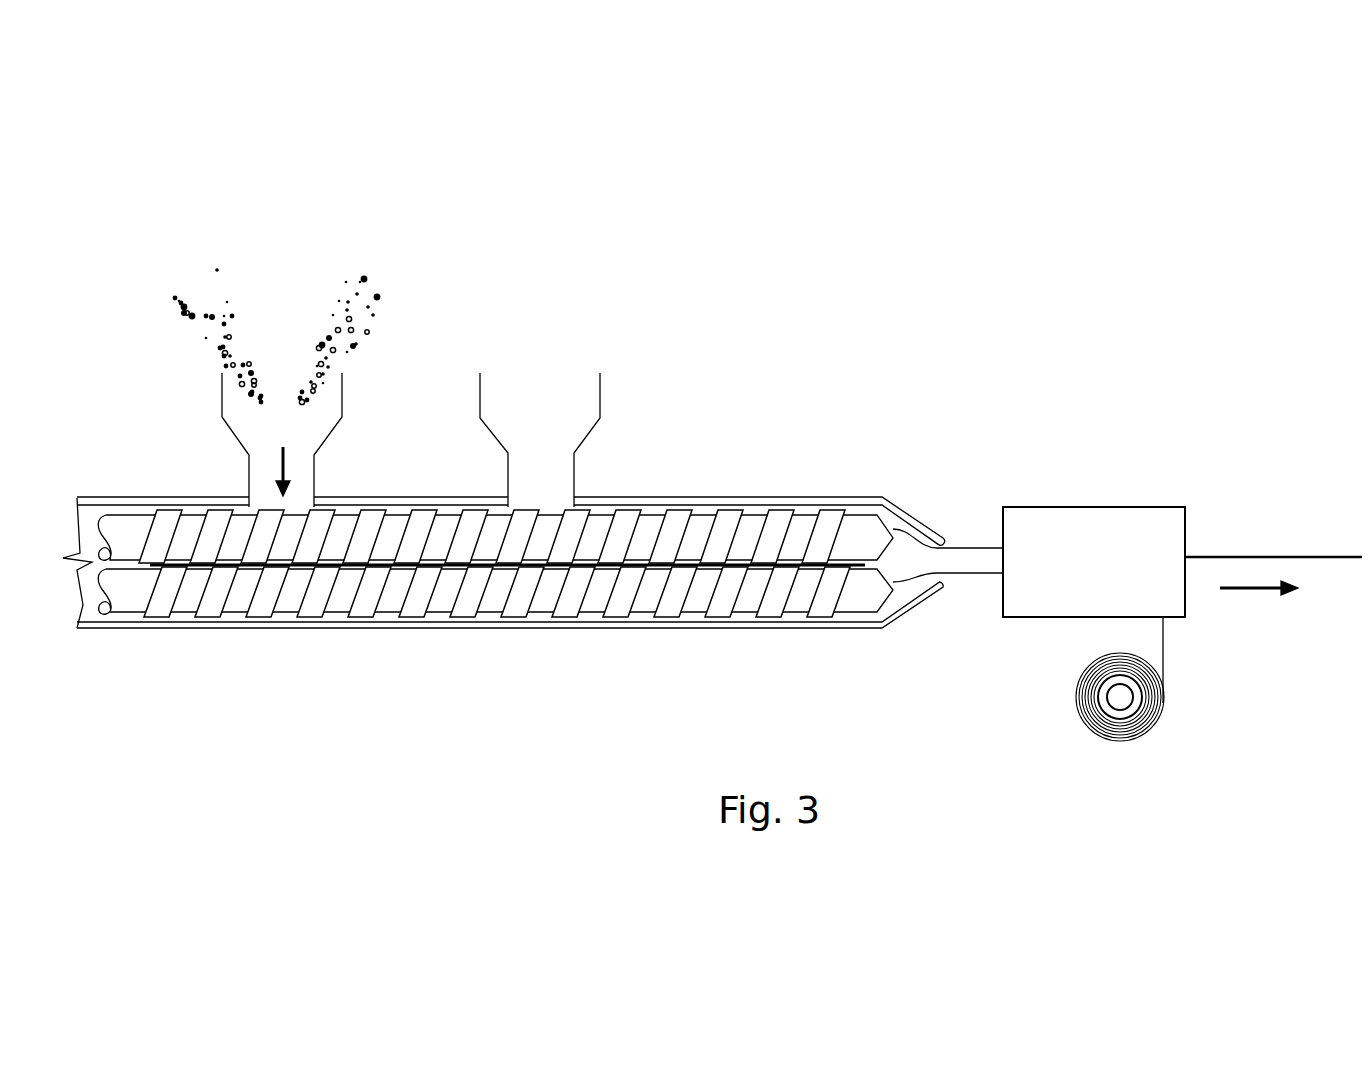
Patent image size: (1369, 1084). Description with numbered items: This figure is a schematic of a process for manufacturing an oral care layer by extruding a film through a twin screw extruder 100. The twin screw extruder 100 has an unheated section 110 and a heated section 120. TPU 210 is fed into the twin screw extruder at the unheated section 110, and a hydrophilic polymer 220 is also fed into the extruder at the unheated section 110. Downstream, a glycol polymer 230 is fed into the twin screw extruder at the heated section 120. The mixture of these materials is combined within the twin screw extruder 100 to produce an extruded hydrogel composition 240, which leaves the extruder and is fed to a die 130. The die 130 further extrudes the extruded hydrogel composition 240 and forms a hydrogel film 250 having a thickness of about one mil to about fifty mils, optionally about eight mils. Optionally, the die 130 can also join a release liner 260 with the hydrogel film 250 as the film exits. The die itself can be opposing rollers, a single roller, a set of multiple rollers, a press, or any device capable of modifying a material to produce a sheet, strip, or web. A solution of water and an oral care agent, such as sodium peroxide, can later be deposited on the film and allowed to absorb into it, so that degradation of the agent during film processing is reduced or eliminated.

The twin screw extruder 100 is at (760, 484).
The unheated section 110 is at (315, 484).
The heated section 120 is at (574, 488).
The die 130 is at (1076, 492).
The TPU 210 is at (336, 284).
The hydrophilic polymer 220 is at (198, 270).
The glycol polymer 230 is at (533, 370).
The extruded hydrogel composition 240 is at (975, 548).
The hydrogel film 250 is at (1236, 556).
The release liner 260 is at (1163, 657).